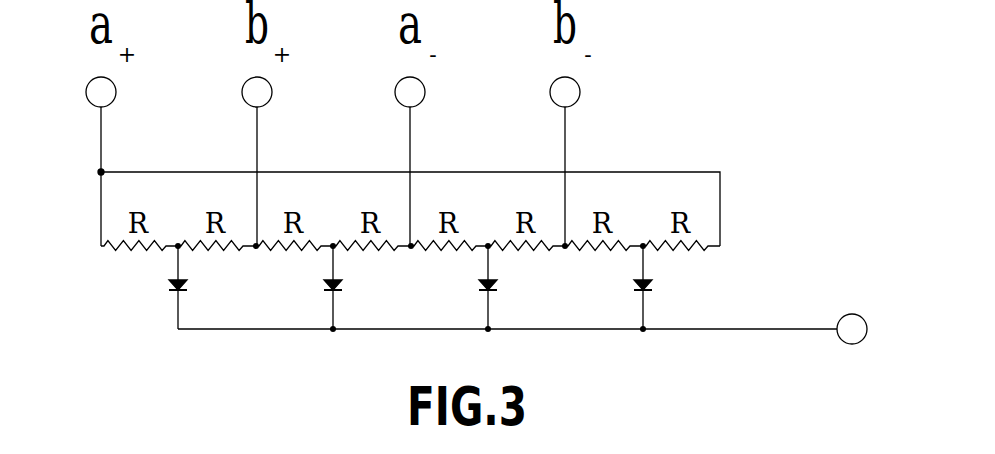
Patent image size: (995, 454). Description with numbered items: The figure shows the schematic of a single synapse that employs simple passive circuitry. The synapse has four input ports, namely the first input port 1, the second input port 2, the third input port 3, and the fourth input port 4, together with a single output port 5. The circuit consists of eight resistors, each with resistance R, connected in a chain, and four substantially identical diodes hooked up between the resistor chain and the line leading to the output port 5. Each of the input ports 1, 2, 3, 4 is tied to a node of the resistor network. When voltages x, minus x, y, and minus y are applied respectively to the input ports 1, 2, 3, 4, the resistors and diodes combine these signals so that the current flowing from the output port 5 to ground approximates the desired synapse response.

The input port a+ 1 is at (88, 107).
The input port a- 2 is at (397, 107).
The input port b+ 3 is at (244, 107).
The input port b- 4 is at (558, 107).
The output port 5 is at (860, 345).